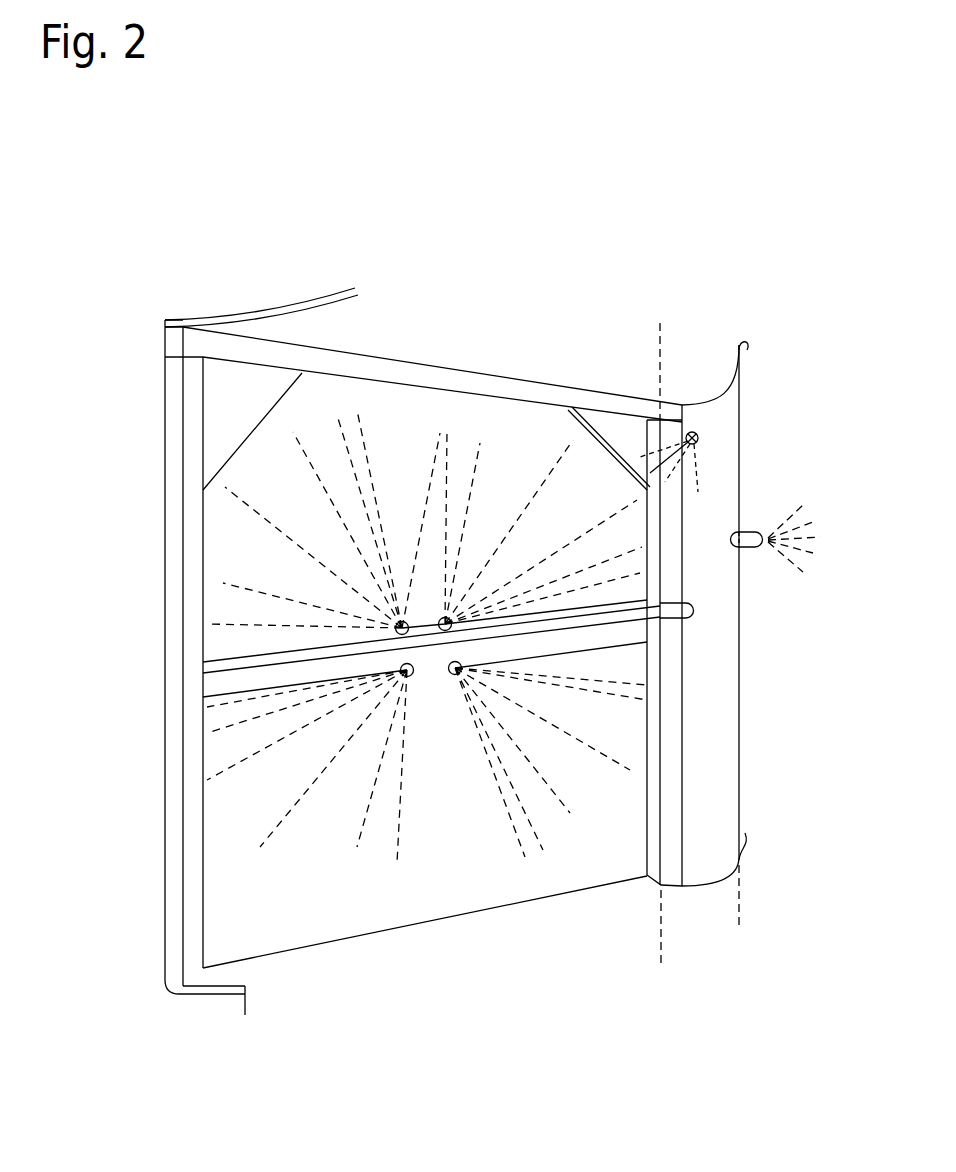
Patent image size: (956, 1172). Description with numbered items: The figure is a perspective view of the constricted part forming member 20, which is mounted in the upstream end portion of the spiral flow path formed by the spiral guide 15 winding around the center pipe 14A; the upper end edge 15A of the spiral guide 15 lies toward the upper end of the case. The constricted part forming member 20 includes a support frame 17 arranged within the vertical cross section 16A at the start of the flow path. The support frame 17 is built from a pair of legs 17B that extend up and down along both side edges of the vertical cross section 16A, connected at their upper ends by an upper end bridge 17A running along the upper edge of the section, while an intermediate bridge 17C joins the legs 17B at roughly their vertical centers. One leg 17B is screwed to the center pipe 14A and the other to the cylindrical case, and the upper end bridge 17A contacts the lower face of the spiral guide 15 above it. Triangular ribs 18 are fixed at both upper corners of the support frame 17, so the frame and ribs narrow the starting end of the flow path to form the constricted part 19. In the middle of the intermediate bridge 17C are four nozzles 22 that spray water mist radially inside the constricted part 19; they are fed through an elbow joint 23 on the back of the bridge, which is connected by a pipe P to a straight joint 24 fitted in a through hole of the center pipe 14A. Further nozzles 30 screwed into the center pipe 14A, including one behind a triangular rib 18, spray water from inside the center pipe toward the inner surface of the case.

The center pipe 14A is at (725, 773).
The spiral guide 15 is at (207, 997).
The upper end edge 15A is at (353, 938).
The vertical cross section 16A is at (570, 878).
The support frame 17 is at (162, 813).
The upper end bridge 17A is at (402, 378).
The legs 17B is at (198, 871).
The intermediate bridge 17C is at (310, 680).
The triangular ribs 18 is at (265, 402).
The constricted part 19 is at (237, 560).
The constricted part forming member 20 is at (162, 421).
The nozzles 22 is at (444, 617).
The elbow joint 23 is at (462, 673).
The straight joint 24 is at (694, 611).
The nozzles 30 is at (754, 532).
The pipe P is at (575, 632).